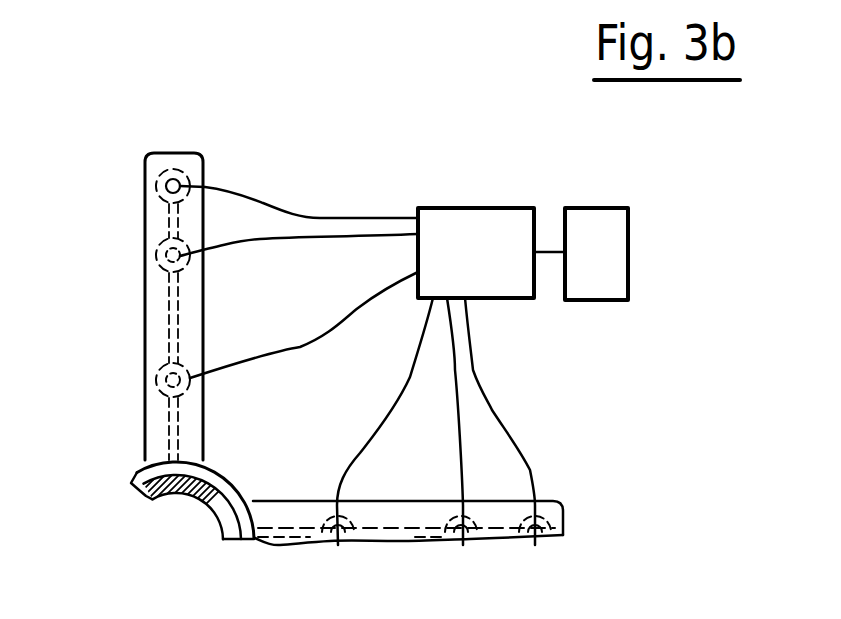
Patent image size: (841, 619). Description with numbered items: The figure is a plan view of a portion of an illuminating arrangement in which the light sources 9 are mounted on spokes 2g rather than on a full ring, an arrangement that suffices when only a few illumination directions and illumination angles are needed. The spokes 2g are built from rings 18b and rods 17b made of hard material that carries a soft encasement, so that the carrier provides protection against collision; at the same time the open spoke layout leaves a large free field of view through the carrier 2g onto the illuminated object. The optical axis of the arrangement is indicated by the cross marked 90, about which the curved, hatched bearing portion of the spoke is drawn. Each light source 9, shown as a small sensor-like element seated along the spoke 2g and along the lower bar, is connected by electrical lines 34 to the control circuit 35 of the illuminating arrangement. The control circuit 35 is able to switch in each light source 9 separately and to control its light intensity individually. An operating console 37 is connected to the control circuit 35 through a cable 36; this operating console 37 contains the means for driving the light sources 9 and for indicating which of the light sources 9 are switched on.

The spokes 2g is at (207, 260).
The rods 17b is at (180, 323).
The rings 18b is at (191, 383).
The electrical lines 34 is at (358, 308).
The control circuit 35 is at (496, 273).
The cable 36 is at (552, 250).
The operating console 37 is at (610, 273).
The light sources 9 is at (339, 546).
The optical axis 90 is at (165, 536).